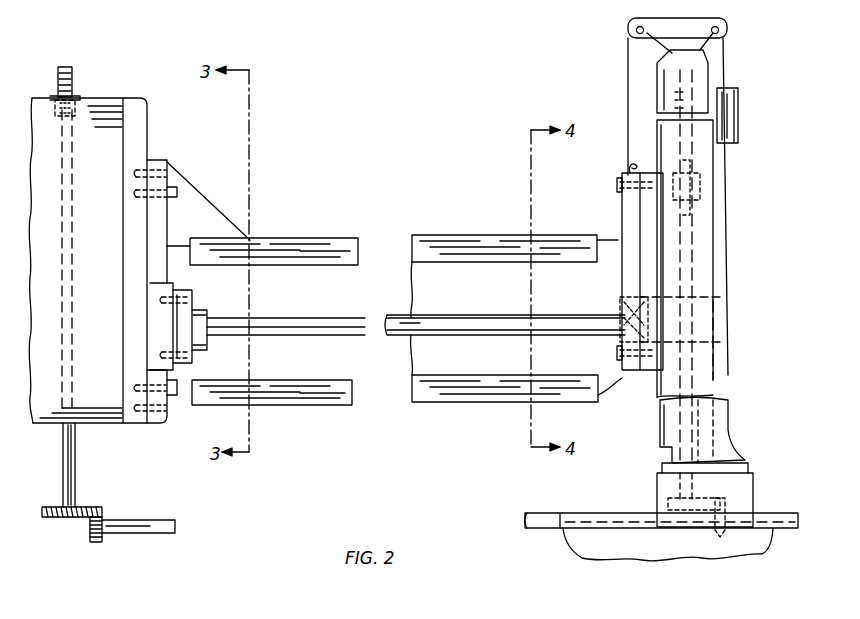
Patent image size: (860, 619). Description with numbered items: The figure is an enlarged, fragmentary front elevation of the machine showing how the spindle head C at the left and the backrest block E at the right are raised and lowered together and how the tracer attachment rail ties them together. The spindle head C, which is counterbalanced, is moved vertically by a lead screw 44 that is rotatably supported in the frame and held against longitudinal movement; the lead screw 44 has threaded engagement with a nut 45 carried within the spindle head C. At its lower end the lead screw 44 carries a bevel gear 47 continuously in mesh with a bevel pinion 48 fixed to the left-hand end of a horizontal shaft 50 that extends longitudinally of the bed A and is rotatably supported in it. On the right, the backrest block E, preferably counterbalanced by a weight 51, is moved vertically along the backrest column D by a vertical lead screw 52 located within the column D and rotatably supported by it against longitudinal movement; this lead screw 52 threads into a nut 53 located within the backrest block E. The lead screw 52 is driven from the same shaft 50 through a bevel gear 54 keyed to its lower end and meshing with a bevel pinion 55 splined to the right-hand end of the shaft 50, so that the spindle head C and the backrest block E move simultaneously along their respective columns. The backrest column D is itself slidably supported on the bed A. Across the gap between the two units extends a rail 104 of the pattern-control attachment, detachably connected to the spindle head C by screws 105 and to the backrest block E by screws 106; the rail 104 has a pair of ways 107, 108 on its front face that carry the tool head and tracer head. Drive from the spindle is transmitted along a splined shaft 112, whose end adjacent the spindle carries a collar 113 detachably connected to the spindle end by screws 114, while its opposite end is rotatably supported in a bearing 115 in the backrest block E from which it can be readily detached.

The spindle head C is at (107, 98).
The nut 45 is at (54, 97).
The screws 105 is at (168, 164).
The screws 114 is at (190, 297).
The collar 113 is at (207, 312).
The splined shaft 112 is at (317, 318).
The way 107 is at (302, 240).
The way 108 is at (297, 397).
The rail 104 is at (417, 271).
The lead screw 44 is at (77, 463).
The bevel gear 47 is at (86, 505).
The bevel pinion 48 is at (102, 540).
The horizontal shaft 50 is at (163, 517).
The backrest block E is at (729, 222).
The weight 51 is at (740, 105).
The nut 53 is at (700, 176).
The screws 106 is at (619, 186).
The bearing 115 is at (620, 287).
The backrest column D is at (658, 435).
The lead screw 52 is at (695, 425).
The bevel gear 54 is at (712, 496).
The bevel pinion 55 is at (726, 506).
The base A is at (638, 558).